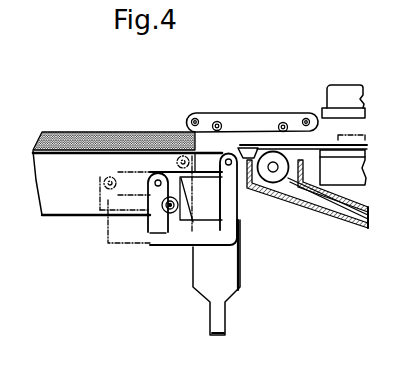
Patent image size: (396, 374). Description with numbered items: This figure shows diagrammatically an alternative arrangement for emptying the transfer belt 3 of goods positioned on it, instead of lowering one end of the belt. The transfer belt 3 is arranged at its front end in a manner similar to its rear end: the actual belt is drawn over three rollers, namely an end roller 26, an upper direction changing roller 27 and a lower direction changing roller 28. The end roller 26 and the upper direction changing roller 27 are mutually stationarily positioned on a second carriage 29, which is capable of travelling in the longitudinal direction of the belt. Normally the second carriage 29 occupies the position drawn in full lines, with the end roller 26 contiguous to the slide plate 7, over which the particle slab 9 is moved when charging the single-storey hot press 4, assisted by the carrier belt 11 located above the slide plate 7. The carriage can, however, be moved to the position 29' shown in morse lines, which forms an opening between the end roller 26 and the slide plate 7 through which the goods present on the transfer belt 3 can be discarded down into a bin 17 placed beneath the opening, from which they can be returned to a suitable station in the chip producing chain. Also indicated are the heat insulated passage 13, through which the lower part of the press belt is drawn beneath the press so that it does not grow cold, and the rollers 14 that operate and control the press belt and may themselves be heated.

The transfer belt 3 is at (53, 216).
The single-storey hot press 4 is at (346, 98).
The slide plate 7 is at (259, 150).
The particle slab 9 is at (63, 135).
The carrier belt 11 is at (263, 115).
The heat insulated passage 13 is at (354, 227).
The rollers 14 is at (275, 172).
The bin 17 is at (233, 277).
The end roller 26 is at (221, 152).
The upper direction changing roller 27 is at (147, 175).
The lower direction changing roller 28 is at (168, 222).
The second carriage 29 is at (146, 240).
The position of second carriage 29' is at (126, 214).